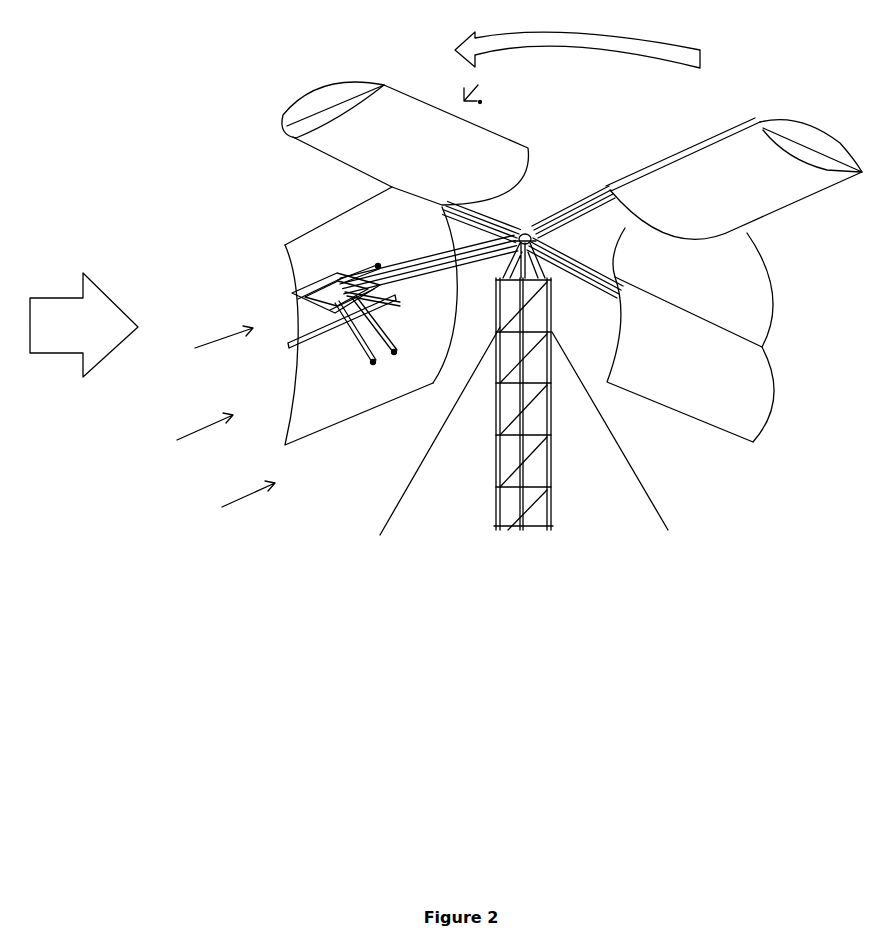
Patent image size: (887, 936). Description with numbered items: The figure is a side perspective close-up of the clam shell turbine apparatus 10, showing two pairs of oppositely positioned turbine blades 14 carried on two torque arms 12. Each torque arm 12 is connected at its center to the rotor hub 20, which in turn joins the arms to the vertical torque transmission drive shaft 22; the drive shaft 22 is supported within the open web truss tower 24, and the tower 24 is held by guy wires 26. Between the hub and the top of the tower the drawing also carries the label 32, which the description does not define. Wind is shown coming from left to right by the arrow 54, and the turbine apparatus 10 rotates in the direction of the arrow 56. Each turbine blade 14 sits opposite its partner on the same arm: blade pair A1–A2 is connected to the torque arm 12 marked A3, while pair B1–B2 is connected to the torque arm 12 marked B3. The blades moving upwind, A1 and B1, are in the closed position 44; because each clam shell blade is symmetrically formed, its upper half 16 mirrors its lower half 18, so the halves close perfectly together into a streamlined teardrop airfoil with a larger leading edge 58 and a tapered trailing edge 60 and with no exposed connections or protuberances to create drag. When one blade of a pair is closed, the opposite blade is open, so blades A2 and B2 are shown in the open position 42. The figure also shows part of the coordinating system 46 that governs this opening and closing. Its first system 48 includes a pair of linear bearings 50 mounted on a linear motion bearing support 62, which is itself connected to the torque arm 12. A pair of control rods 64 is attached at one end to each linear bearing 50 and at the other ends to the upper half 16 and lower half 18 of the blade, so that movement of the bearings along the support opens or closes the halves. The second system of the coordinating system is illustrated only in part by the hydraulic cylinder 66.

The turbine apparatus 10 is at (235, 504).
The torque arm 12 is at (495, 205).
The turbine blade 14 is at (800, 198).
The upper half 16 is at (358, 222).
The lower half 18 is at (338, 417).
The rotor hub 20 is at (540, 230).
The vertical torque transmission drive shaft 22 is at (520, 460).
The open web truss tower 24 is at (552, 512).
The guy wires 26 is at (647, 483).
The hub mount 32 is at (497, 278).
The open position 42 is at (210, 344).
The closed position 44 is at (478, 86).
The coordinating system 46 is at (192, 434).
The first system 48 is at (331, 358).
The linear bearings 50 is at (330, 270).
The arrow 54 is at (50, 297).
The arrow 56 is at (592, 47).
The leading-edge 58 is at (693, 147).
The trailing edge 60 is at (498, 140).
The linear motion bearing support 62 is at (292, 295).
The control rods 64 is at (387, 343).
The hydraulic cylinder 66 is at (383, 313).
The turbine blade A1 is at (797, 117).
The turbine blade A2 is at (292, 243).
The torque arm A3 is at (584, 207).
The turbine blade B1 is at (340, 92).
The turbine blade B2 is at (747, 302).
The torque arm B3 is at (571, 257).